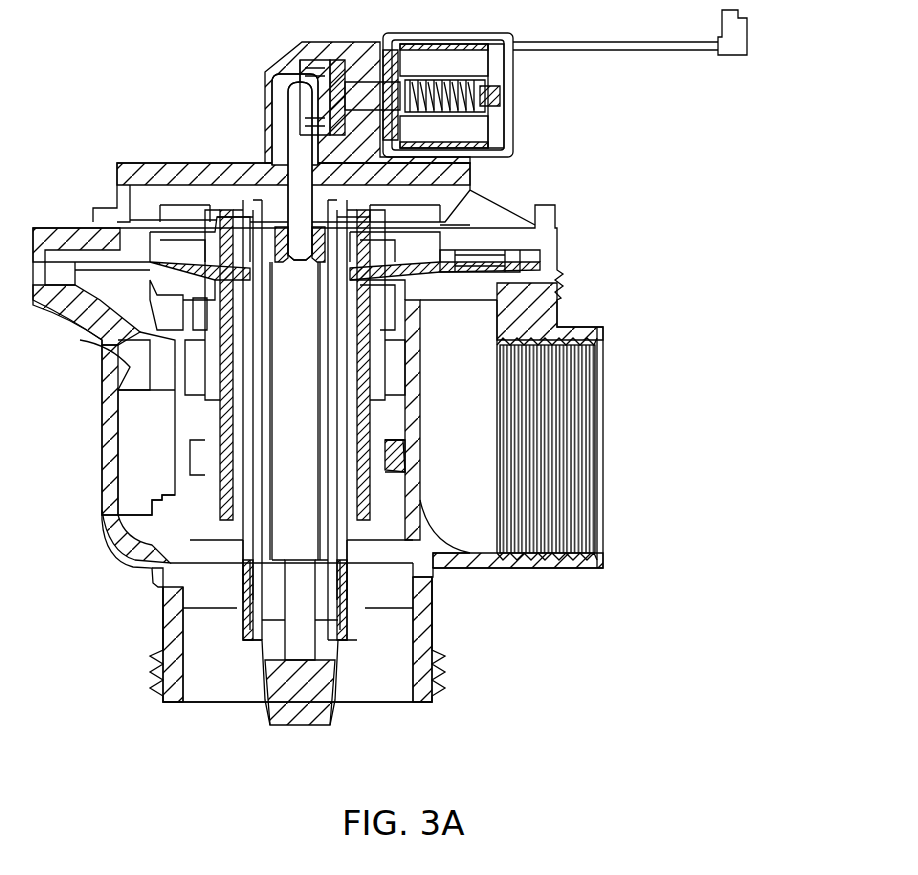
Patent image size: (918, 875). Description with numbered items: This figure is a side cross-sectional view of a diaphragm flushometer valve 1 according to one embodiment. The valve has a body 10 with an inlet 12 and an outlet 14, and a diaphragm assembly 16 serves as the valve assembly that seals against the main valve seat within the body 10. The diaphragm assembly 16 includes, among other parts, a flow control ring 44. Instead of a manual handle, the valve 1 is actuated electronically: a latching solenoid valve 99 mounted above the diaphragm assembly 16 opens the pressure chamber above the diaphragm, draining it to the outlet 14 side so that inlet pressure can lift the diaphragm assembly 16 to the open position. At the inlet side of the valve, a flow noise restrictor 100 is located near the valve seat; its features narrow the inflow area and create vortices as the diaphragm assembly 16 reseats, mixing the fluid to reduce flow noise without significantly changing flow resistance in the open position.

The flushometer valve 1 is at (578, 689).
The body 10 is at (97, 497).
The inlet 12 is at (573, 430).
The outlet 14 is at (424, 672).
The diaphragm assembly 16 is at (452, 240).
The flow control ring 44 is at (395, 455).
The latching solenoid valve 99 is at (268, 122).
The flow noise restrictor 100 is at (115, 367).